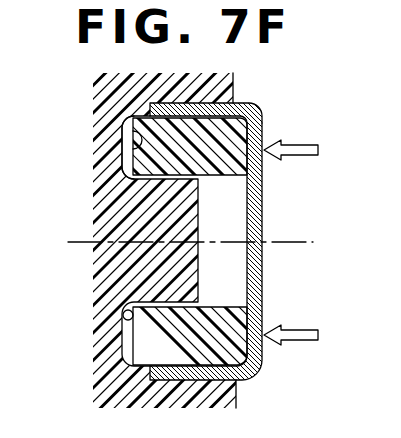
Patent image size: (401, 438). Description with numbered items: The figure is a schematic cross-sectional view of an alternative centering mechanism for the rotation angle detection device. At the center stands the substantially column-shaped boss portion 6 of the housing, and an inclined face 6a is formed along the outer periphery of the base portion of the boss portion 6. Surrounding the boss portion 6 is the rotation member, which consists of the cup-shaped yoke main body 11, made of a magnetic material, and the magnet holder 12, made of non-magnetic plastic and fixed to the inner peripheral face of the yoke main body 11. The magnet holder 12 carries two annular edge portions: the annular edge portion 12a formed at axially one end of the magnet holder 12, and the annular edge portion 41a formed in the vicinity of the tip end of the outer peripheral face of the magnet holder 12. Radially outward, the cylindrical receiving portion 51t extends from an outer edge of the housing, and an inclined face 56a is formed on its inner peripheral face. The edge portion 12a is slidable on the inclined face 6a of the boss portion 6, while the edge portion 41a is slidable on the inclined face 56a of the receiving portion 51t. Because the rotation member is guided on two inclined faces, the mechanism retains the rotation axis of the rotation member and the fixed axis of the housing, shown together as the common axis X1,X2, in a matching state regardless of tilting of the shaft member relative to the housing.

The boss portion 6 is at (198, 226).
The inclined face 6a is at (118, 316).
The yoke main body 11 is at (262, 283).
The magnet holder 12 is at (263, 116).
The annular edge portion 12a is at (123, 176).
The annular edge portion 41a is at (123, 364).
The cylindrical receiving portion 51t is at (233, 397).
The inclined face 56a is at (147, 150).
The fixed axis and rotation axis X1,X2 is at (226, 242).